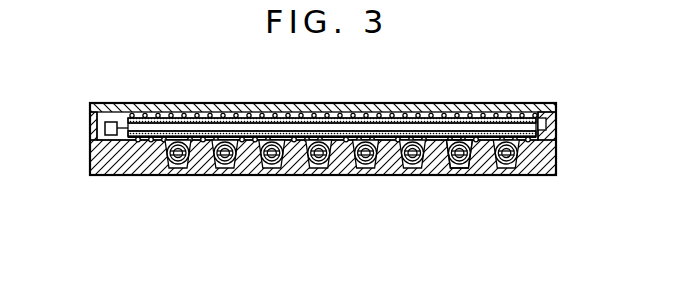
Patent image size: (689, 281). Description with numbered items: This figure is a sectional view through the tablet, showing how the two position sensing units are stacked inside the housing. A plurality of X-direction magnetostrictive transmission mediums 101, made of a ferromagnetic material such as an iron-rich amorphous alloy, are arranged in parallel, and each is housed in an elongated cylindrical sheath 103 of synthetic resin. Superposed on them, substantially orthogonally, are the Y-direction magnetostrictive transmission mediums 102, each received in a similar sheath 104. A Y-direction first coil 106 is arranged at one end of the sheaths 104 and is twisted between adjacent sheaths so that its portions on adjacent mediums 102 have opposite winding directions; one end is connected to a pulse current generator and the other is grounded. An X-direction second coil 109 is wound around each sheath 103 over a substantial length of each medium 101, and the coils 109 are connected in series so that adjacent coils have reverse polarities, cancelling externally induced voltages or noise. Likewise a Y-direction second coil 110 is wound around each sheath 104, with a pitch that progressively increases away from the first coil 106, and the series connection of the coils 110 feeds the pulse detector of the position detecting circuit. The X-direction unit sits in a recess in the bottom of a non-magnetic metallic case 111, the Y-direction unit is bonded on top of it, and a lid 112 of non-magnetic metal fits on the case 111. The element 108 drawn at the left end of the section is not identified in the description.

The X-direction magnetostrictive transmission medium 101 is at (223, 163).
The Y-direction magnetostrictive transmission medium 102 is at (540, 128).
The elongated cylindrical sheath 103 is at (462, 165).
The sheath 104 is at (235, 109).
The Y-direction first electro-magnetic converter 106 is at (137, 108).
The terminal block 108 is at (105, 128).
The X-direction second electromagnetic converter 109 is at (262, 163).
The Y-direction second electro-magnetic converter 110 is at (472, 108).
The non-magnetic metallic case 111 is at (558, 154).
The lid 112 is at (528, 109).